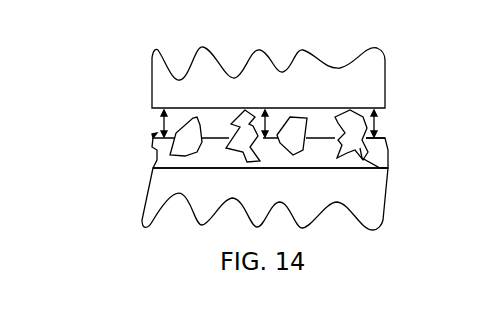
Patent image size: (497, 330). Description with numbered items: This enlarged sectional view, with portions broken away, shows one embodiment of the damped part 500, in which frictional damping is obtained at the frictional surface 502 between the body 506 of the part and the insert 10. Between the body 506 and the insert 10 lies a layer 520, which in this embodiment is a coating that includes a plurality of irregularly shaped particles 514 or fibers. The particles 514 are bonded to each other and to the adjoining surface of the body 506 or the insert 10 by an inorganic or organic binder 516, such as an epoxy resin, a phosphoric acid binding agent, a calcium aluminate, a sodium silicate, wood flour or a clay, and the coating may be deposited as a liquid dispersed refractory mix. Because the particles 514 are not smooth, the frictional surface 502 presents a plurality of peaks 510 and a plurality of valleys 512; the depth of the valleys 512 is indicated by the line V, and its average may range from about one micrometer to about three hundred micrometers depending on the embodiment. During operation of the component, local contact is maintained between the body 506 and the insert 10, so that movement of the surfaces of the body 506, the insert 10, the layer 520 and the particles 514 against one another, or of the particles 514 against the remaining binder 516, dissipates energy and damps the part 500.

The part 500 is at (111, 62).
The frictional surface 502 is at (327, 113).
The body of the part 506 is at (363, 85).
The peaks 510 is at (250, 117).
The valleys 512 is at (153, 134).
The particles 514 is at (353, 139).
The binder 516 is at (163, 161).
The layer 520 is at (131, 148).
The insert 10 is at (167, 192).
The depth of the valleys V is at (263, 122).